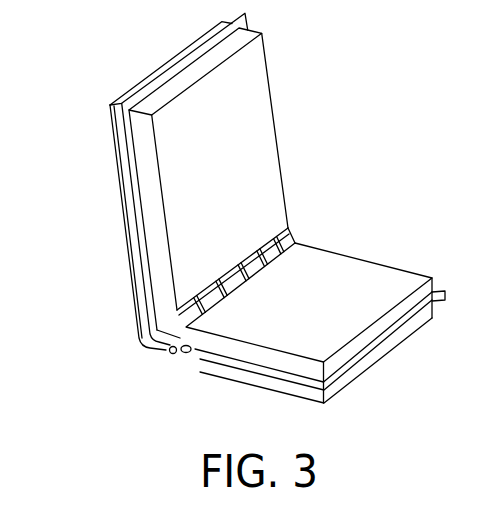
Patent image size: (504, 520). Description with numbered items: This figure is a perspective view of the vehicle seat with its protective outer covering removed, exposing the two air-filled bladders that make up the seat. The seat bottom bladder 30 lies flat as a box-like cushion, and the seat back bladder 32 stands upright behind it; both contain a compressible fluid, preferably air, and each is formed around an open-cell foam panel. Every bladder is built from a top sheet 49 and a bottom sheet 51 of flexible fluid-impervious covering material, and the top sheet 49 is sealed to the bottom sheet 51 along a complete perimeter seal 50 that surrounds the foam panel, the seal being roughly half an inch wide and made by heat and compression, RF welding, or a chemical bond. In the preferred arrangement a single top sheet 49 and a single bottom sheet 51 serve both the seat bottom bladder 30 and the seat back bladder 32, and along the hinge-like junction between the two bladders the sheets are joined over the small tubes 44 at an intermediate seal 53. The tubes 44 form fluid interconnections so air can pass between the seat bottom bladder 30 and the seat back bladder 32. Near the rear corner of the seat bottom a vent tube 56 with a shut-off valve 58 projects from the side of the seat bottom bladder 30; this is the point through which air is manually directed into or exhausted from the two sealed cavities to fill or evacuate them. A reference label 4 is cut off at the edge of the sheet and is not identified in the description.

The seat bottom bladder 30 is at (362, 283).
The seat back bladder 32 is at (243, 97).
The tubes 44 is at (193, 310).
The top sheet 49 is at (248, 77).
The perimeter seal 50 is at (137, 207).
The bottom sheet 51 is at (158, 353).
The intermediate seal 53 is at (270, 245).
The vent tube 56 is at (188, 352).
The shut-off valve 58 is at (160, 356).
The partial numeral 4 is at (498, 215).